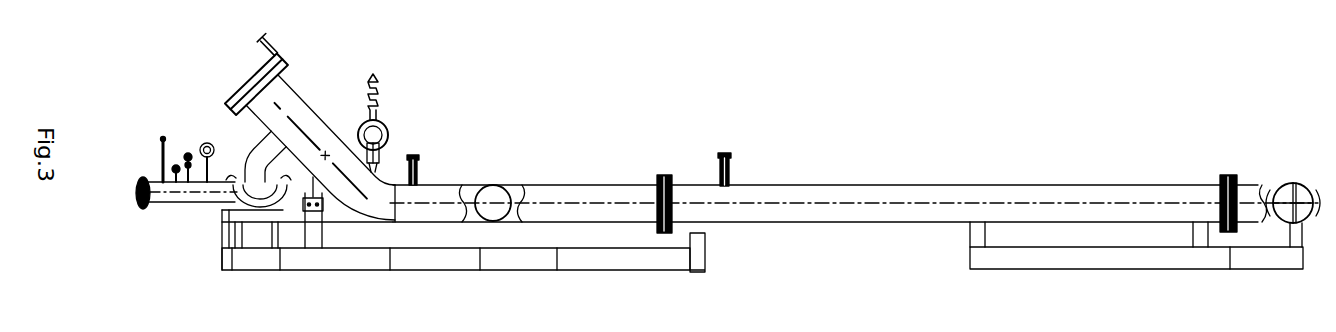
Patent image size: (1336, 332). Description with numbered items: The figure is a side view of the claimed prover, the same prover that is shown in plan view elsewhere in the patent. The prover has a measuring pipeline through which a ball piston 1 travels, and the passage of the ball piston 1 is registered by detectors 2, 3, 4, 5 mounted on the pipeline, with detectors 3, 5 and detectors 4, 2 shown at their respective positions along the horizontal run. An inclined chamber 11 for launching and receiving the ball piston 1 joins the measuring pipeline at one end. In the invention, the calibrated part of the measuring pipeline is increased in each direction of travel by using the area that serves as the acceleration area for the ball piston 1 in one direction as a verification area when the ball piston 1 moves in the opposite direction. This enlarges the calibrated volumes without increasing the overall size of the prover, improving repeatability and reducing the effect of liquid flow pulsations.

The ball piston 1 is at (488, 184).
The detector 2 is at (731, 169).
The detector 3 is at (445, 155).
The detector 4 is at (763, 159).
The detector 5 is at (417, 170).
The chamber for launching/receiving a ball piston 11 is at (302, 118).